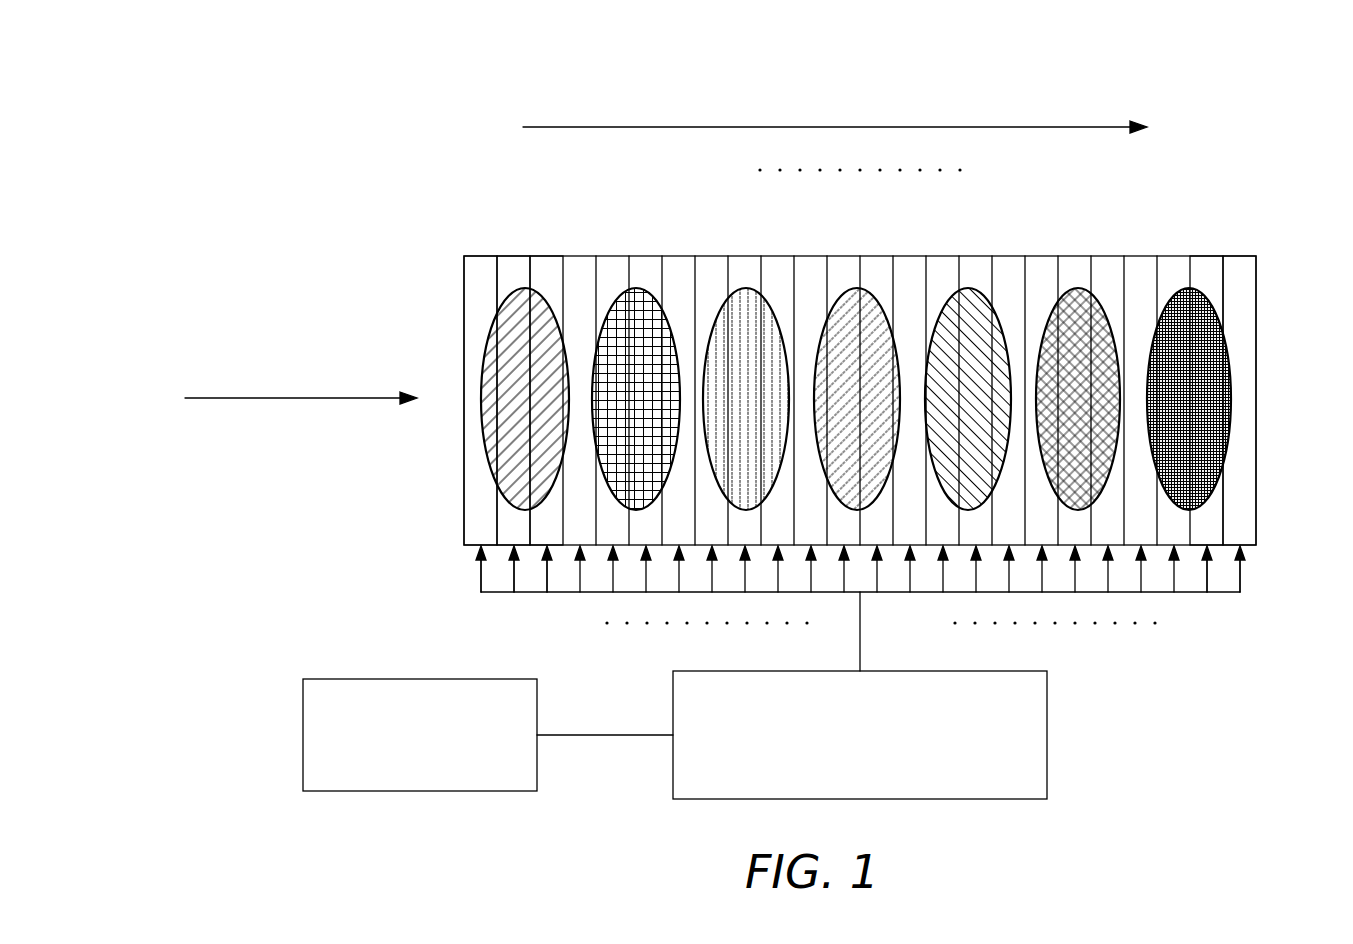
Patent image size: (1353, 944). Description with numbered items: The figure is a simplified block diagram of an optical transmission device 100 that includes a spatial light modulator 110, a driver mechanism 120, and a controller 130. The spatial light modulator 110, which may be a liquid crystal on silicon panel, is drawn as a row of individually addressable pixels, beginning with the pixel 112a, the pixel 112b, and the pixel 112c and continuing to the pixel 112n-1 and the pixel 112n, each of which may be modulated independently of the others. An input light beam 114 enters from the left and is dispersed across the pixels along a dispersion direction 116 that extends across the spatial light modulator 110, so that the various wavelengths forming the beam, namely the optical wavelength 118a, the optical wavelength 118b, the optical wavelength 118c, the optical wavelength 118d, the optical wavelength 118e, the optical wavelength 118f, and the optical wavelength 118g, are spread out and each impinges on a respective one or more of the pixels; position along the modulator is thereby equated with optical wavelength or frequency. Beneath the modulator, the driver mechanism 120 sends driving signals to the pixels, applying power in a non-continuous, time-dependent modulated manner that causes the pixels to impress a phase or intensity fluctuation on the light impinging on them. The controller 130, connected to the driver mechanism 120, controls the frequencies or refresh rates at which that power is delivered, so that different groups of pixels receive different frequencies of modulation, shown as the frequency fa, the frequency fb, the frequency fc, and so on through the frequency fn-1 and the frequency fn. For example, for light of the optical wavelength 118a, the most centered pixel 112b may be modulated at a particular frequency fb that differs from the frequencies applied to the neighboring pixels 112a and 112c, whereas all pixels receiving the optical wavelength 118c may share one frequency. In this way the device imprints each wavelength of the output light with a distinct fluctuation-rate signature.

The optical transmission device 100 is at (322, 161).
The spatial light modulator 110 is at (799, 394).
The pixel 112a is at (473, 255).
The pixel 112b is at (512, 256).
The pixel 112c is at (548, 256).
The pixel 112n-1 is at (1202, 255).
The pixel 112n is at (1232, 255).
The light beam 114 is at (323, 397).
The dispersion direction 116 is at (852, 127).
The optical wavelength A 118a is at (489, 345).
The optical wavelength 118b is at (640, 288).
The optical wavelength 118c is at (748, 288).
The optical wavelength 118d is at (849, 288).
The optical wavelength 118e is at (955, 292).
The optical wavelength 118f is at (1077, 290).
The optical wavelength 118g is at (1231, 388).
The driver mechanism 120 is at (845, 761).
The controller 130 is at (403, 761).
The frequency of modulation fa is at (481, 572).
The frequency of modulation fb is at (514, 575).
The frequency of modulation fc is at (547, 575).
The frequency of modulation fn-1 is at (1207, 580).
The frequency of modulation fn is at (1240, 565).